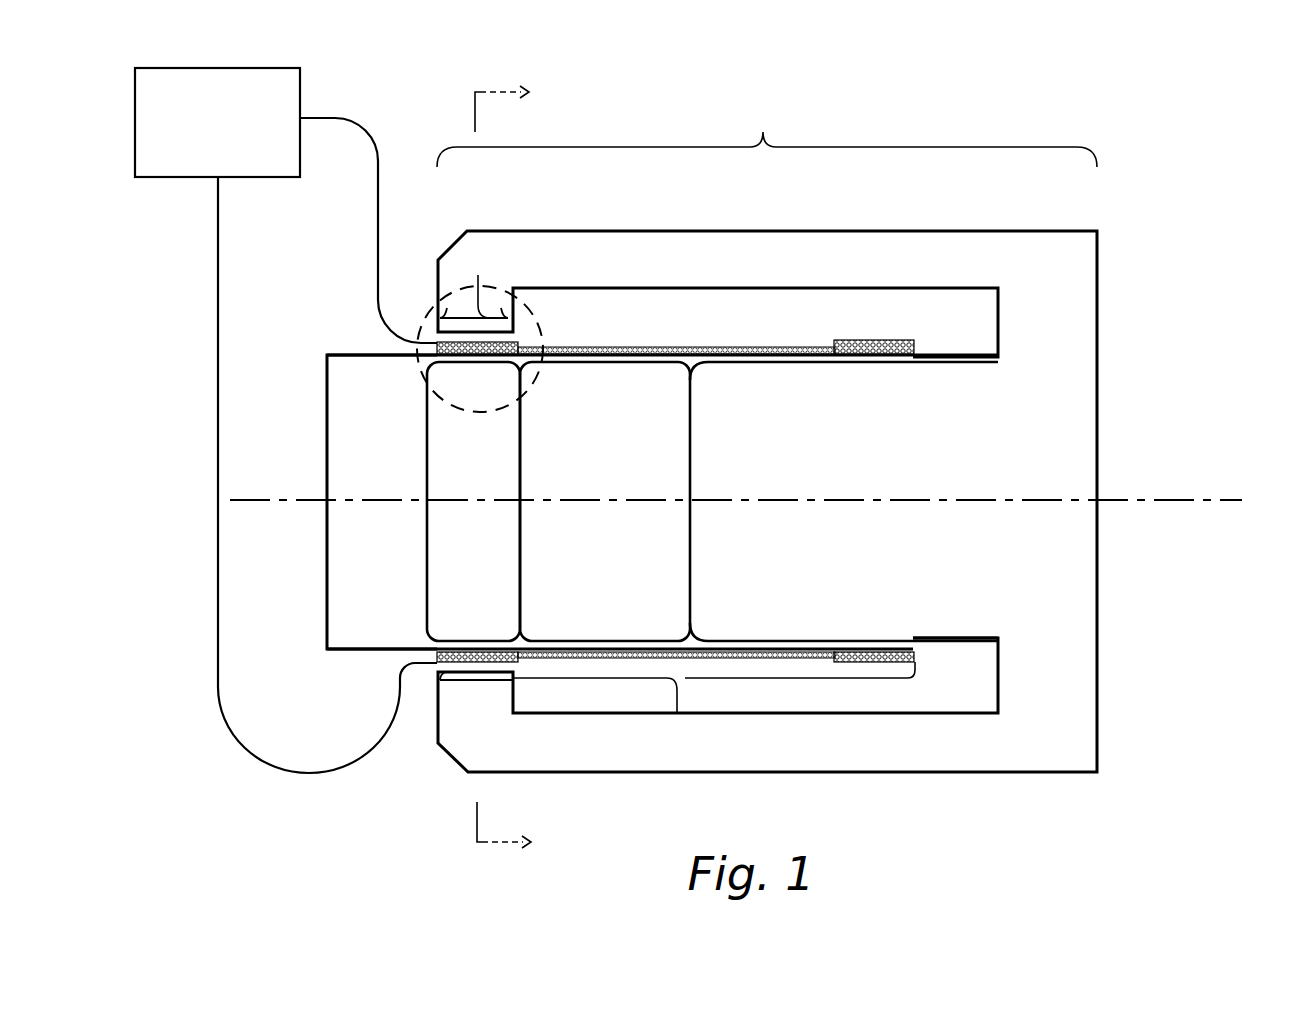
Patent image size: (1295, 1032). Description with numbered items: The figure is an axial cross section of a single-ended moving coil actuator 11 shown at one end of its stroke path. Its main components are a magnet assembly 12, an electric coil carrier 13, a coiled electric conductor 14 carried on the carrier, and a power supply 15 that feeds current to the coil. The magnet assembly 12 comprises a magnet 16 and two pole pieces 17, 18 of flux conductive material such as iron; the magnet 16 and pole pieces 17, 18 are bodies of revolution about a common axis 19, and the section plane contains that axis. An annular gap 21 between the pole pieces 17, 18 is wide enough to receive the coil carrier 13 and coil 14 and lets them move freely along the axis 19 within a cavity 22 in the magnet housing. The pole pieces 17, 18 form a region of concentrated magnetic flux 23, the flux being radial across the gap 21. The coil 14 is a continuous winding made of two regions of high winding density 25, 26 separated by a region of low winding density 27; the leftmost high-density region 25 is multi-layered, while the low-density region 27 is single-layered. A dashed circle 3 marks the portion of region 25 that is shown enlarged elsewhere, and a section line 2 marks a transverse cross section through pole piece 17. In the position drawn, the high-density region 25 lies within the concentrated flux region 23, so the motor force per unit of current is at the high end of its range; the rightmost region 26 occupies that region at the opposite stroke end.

The section line of FIG. 2 is at (517, 469).
The dashed circle 3 is at (445, 405).
The actuator 11 is at (1174, 181).
The magnet assembly 12 is at (767, 130).
The electric coil carrier 13 is at (355, 353).
The coiled electric conductor 14 is at (677, 713).
The power supply 15 is at (175, 67).
The magnet 16 is at (550, 578).
The pole piece 17 is at (440, 533).
The pole piece 18 is at (480, 268).
The common axis 19 is at (1202, 497).
The annular gap 21 is at (515, 670).
The cavity 22 is at (656, 312).
The region of concentrated magnetic flux 23 is at (478, 300).
The region of high winding density 25 is at (490, 347).
The region of high winding density 26 is at (875, 340).
The region of low winding density 27 is at (735, 346).